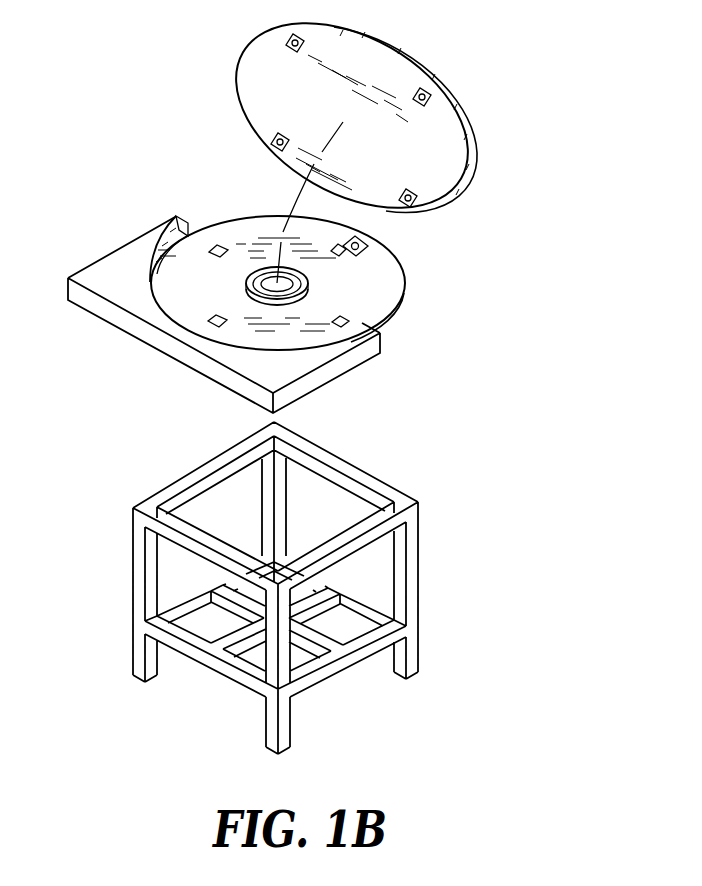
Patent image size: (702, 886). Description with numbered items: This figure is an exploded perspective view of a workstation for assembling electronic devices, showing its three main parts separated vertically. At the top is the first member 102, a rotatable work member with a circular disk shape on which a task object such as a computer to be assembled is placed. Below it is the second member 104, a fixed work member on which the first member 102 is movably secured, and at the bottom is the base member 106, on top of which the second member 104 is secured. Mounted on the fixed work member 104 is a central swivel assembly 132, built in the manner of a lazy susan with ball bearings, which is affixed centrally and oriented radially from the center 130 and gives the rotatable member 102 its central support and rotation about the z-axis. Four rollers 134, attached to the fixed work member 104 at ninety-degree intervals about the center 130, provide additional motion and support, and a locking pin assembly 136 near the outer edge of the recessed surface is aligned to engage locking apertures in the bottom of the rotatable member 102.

The first member 102 is at (490, 117).
The second member 104 is at (420, 303).
The base member 106 is at (430, 588).
The center 130 is at (313, 280).
The central swivel assembly 132 is at (177, 220).
The rollers 134 is at (227, 240).
The locking pin assembly 136 is at (367, 245).